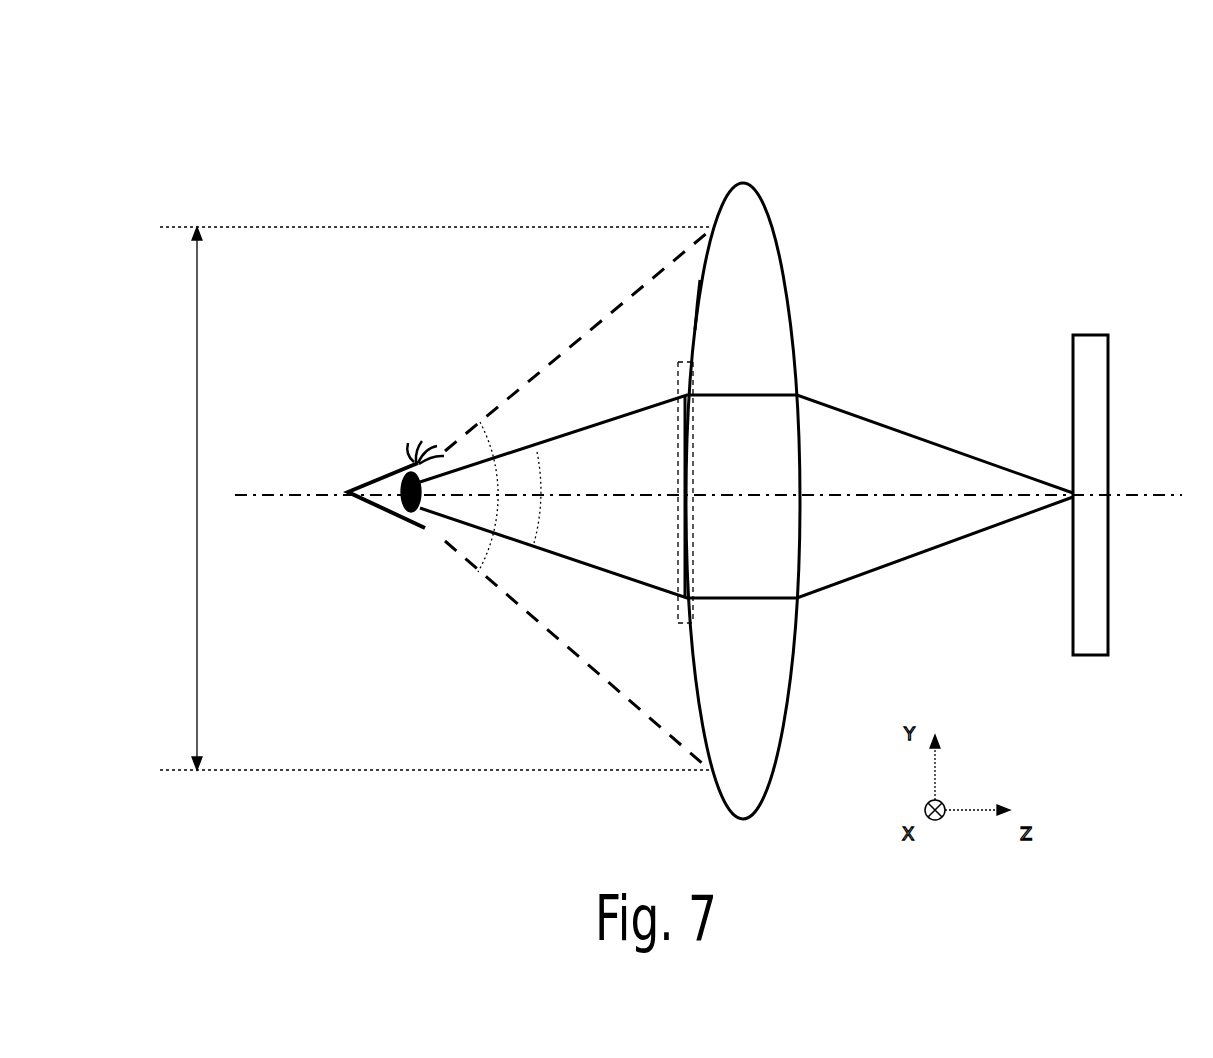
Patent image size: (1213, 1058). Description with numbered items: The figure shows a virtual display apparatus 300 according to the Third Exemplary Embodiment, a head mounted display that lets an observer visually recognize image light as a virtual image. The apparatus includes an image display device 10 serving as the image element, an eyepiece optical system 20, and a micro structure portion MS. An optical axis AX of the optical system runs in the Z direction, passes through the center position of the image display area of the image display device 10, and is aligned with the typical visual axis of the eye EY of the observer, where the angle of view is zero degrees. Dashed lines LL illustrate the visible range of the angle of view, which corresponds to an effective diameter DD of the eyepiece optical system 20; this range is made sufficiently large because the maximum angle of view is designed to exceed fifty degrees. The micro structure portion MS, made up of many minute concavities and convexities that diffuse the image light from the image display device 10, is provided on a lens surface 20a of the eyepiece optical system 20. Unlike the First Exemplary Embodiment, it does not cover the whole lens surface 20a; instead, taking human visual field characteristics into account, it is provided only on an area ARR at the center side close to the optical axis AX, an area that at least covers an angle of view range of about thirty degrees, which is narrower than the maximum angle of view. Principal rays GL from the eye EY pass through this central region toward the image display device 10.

The virtual display apparatus 300 is at (995, 138).
The eyepiece optical system 20 is at (752, 222).
The lens surface 20a is at (693, 330).
The image display device 10 is at (1085, 322).
The optical axis AX is at (1141, 490).
The effective diameter DD is at (436, 498).
The principal light ray GL is at (612, 424).
The dashed lines LL is at (528, 378).
The area ARR is at (686, 372).
The micro structure portion MS is at (680, 432).
The eye EY is at (392, 512).